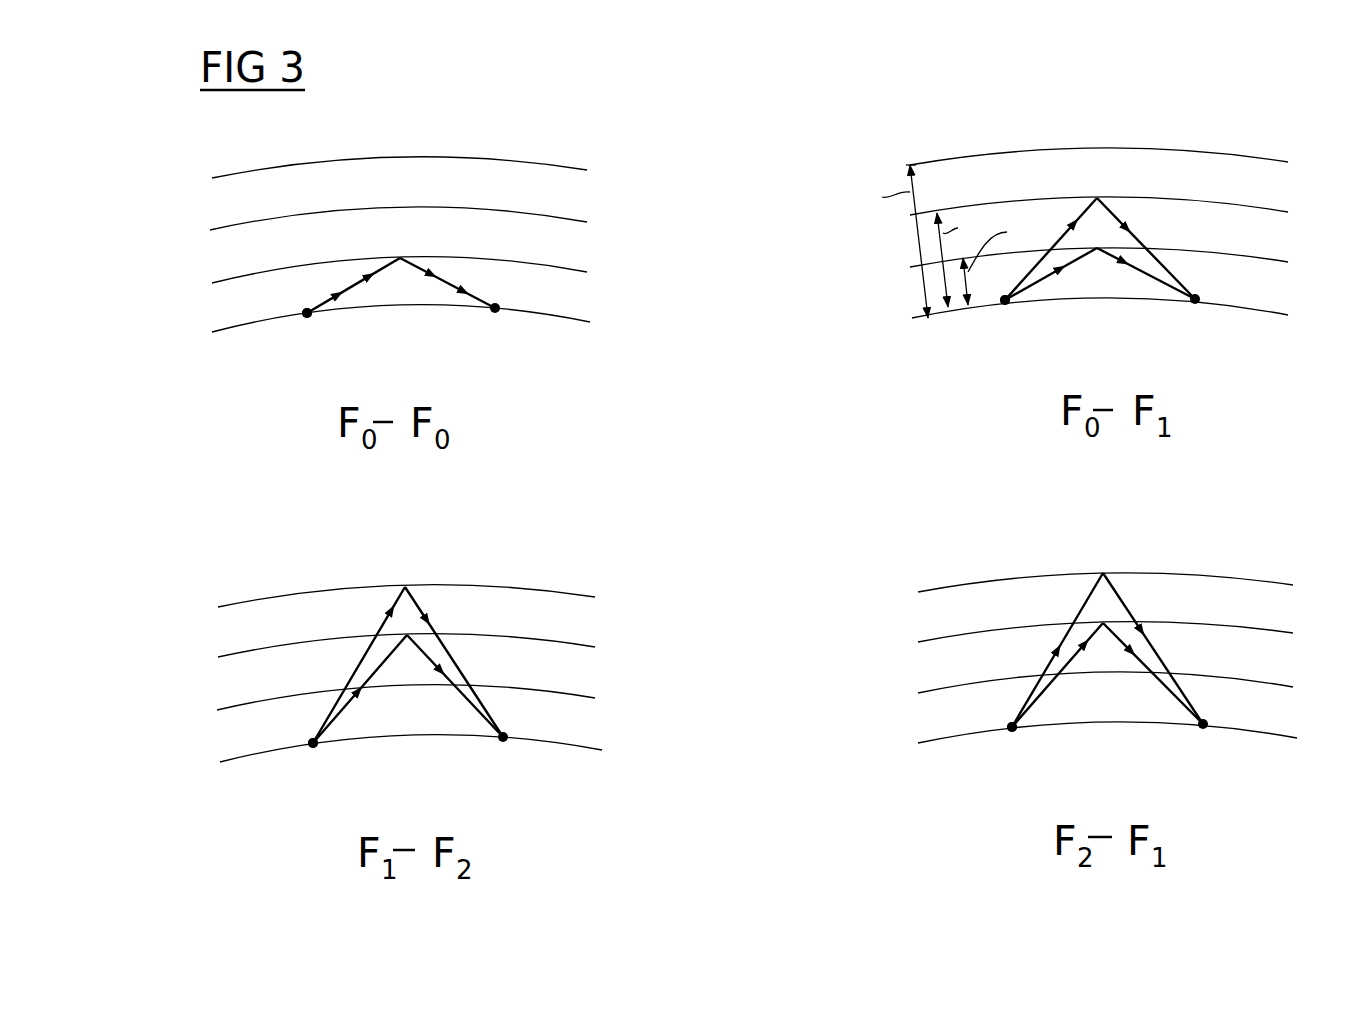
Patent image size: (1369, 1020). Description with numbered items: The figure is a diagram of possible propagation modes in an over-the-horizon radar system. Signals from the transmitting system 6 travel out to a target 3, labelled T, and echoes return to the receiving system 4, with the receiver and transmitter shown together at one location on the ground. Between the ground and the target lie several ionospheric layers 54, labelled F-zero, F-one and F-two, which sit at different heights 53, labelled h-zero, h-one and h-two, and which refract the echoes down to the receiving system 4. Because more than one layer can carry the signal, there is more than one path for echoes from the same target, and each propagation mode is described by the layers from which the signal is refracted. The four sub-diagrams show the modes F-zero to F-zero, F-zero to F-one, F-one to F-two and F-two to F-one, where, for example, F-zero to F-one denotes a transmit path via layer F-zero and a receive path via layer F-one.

The target 3 is at (834, 546).
The receiving system 4 is at (659, 549).
The transmitting system 6 is at (1060, 333).
The heights 53 is at (962, 287).
The ionospheric layers 54 is at (250, 222).